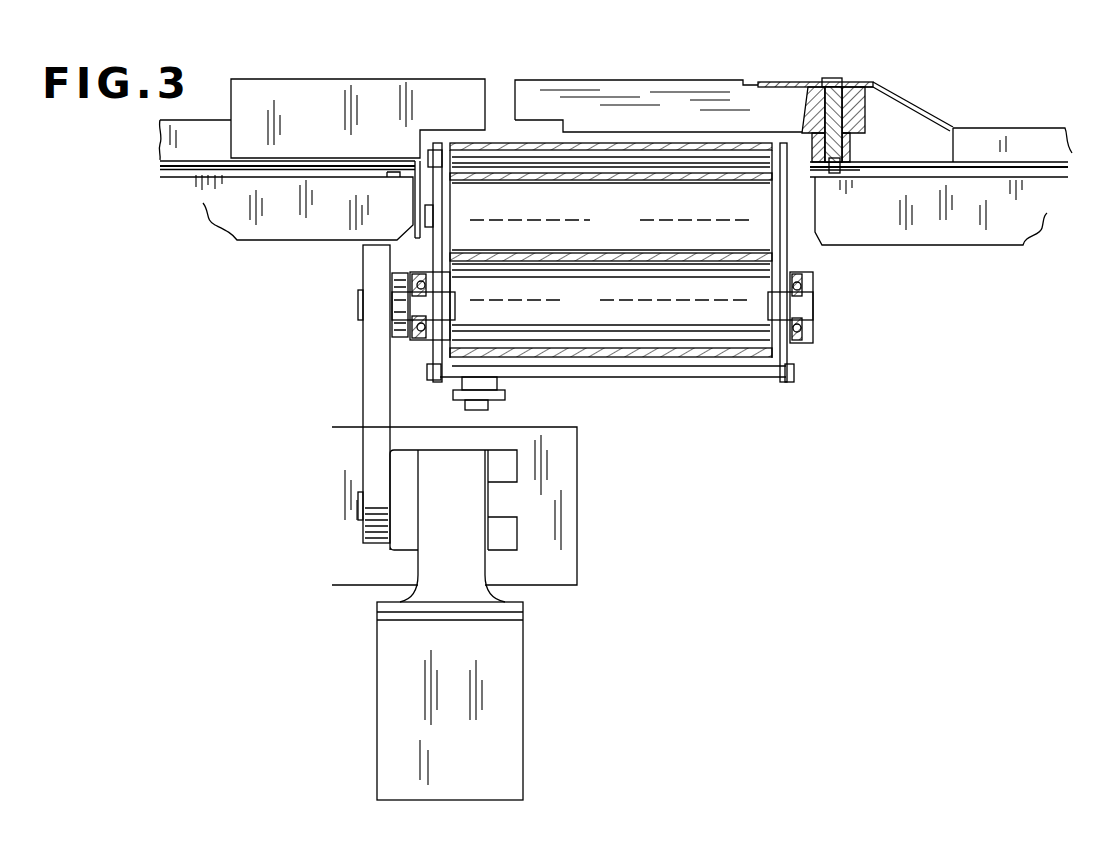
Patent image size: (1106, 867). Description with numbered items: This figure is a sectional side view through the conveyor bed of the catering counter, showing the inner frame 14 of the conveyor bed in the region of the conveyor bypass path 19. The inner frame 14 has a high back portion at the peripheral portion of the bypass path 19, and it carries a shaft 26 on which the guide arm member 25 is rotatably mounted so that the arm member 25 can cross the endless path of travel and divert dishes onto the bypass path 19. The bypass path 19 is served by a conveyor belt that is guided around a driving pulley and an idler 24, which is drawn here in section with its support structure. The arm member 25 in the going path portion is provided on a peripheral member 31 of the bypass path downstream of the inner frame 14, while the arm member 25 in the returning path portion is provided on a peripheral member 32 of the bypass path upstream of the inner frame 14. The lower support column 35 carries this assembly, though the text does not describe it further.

The inner frame 14 is at (196, 145).
The conveyor bypass path 19 is at (740, 147).
The idler 24 is at (542, 160).
The guide arm member 25 is at (714, 100).
The shaft 26 is at (831, 175).
The peripheral member of the bypass path 31 is at (897, 120).
The peripheral member of the bypass path 32 is at (439, 99).
The support column 35 is at (470, 506).